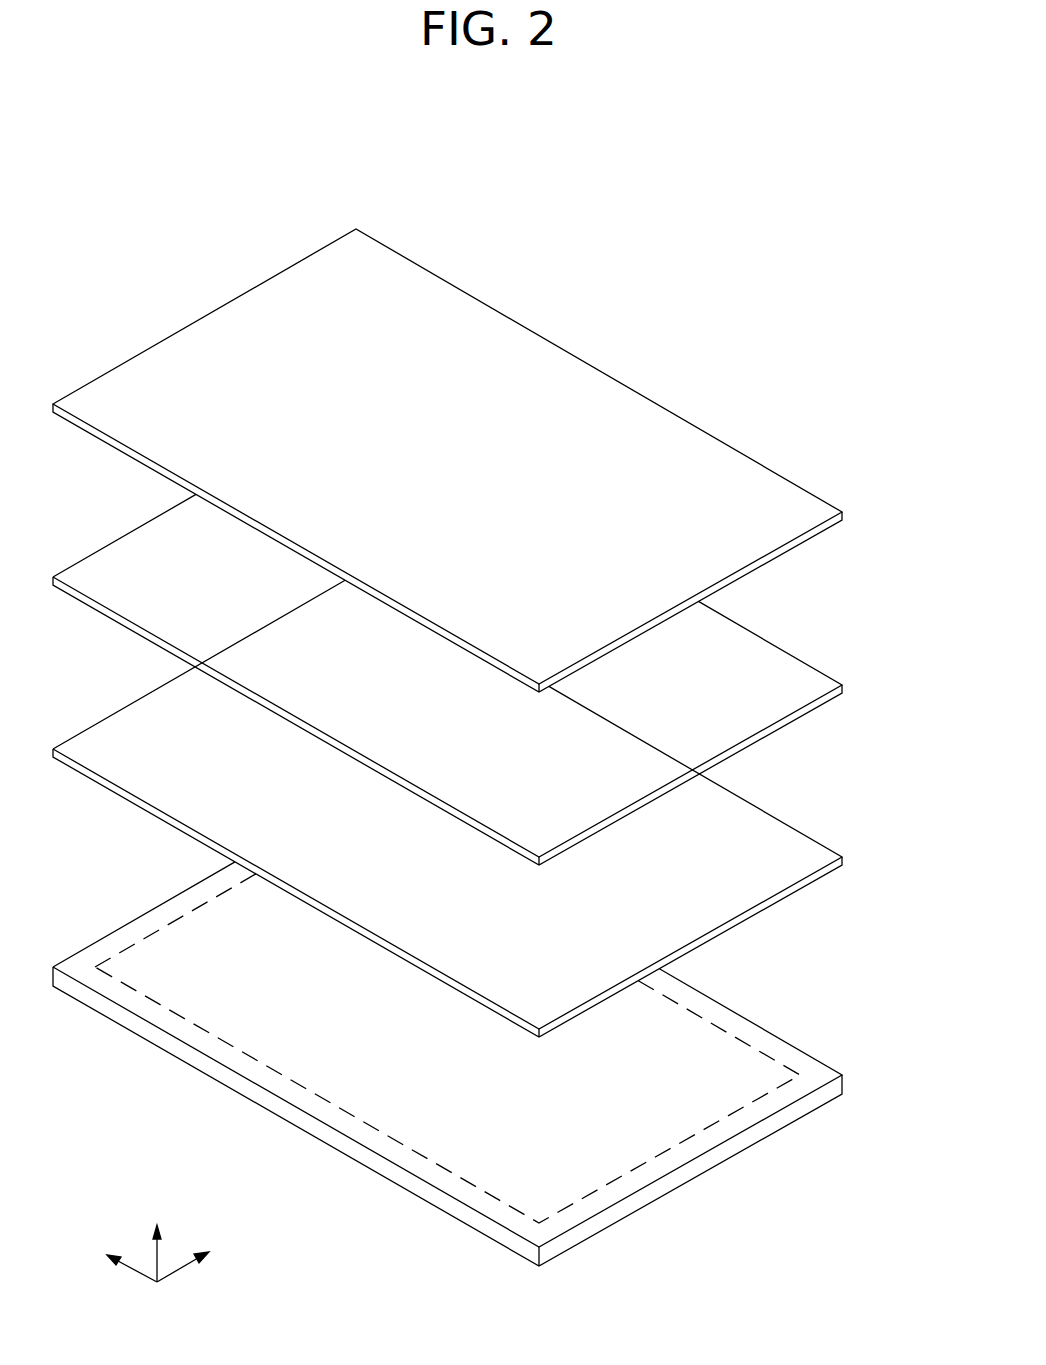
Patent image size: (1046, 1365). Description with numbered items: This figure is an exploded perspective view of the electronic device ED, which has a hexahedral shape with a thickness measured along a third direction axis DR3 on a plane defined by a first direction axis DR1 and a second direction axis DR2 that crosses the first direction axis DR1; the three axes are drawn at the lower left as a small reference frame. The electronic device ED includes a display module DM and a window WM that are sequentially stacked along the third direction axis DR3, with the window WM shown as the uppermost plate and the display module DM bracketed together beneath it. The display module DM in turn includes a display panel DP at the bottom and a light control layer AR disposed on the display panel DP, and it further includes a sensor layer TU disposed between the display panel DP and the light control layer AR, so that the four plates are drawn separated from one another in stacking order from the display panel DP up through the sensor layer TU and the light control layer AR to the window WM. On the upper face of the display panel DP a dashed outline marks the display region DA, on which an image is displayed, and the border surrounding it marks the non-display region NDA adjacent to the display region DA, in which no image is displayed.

The electronic device ED is at (684, 292).
The window WM is at (844, 516).
The light control layer AR is at (844, 689).
The sensor layer TU is at (844, 861).
The display panel DP is at (844, 1084).
The display module DM is at (915, 677).
The display region DA is at (163, 936).
The non-display region NDA is at (97, 953).
The first direction axis DR1 is at (206, 1258).
The second direction axis DR2 is at (109, 1258).
The third direction axis DR3 is at (157, 1240).